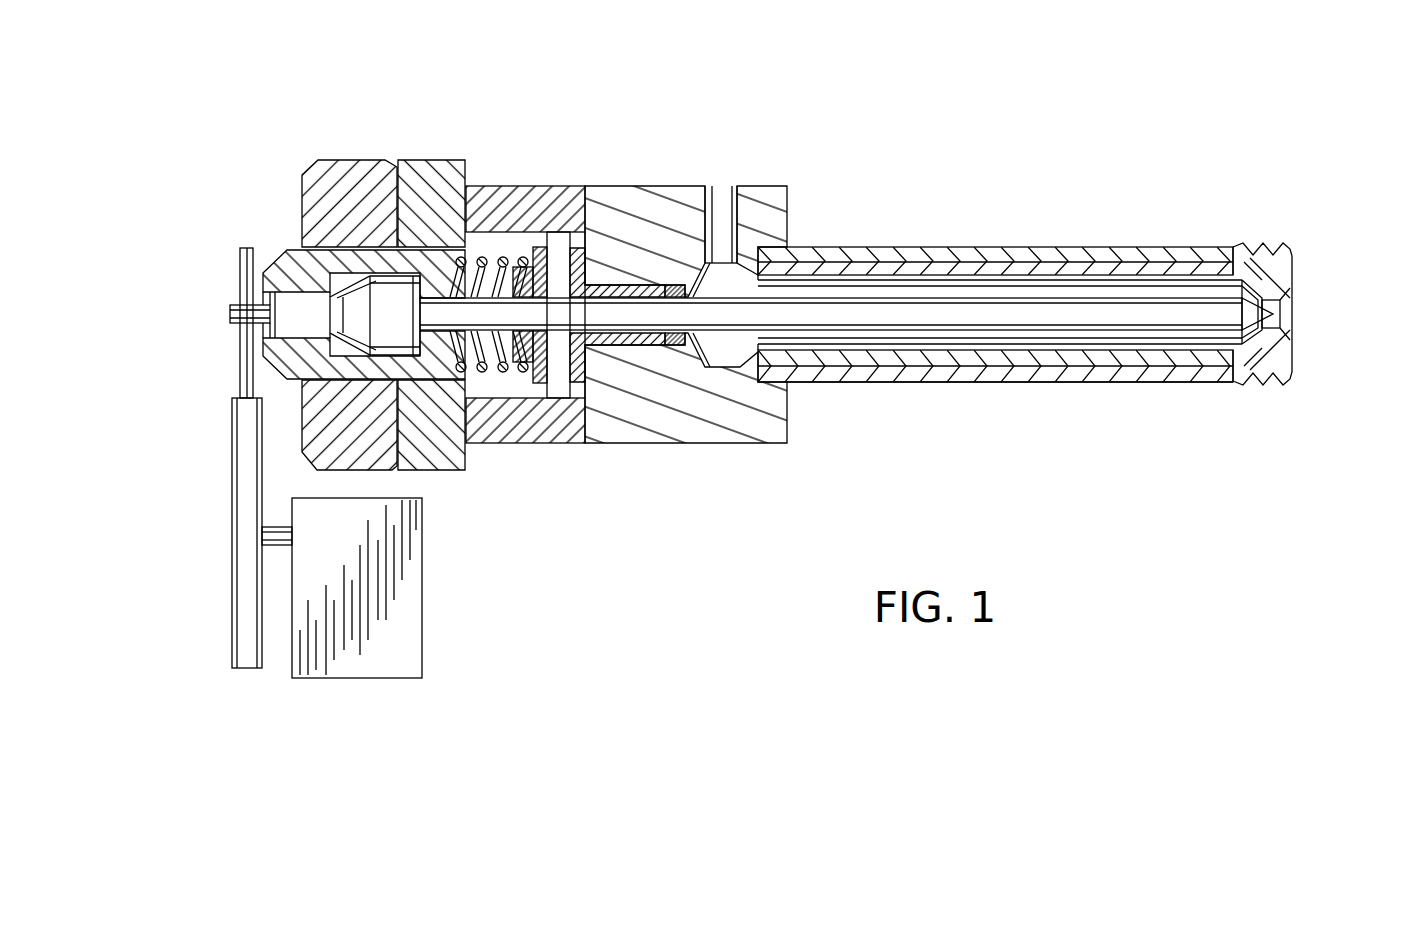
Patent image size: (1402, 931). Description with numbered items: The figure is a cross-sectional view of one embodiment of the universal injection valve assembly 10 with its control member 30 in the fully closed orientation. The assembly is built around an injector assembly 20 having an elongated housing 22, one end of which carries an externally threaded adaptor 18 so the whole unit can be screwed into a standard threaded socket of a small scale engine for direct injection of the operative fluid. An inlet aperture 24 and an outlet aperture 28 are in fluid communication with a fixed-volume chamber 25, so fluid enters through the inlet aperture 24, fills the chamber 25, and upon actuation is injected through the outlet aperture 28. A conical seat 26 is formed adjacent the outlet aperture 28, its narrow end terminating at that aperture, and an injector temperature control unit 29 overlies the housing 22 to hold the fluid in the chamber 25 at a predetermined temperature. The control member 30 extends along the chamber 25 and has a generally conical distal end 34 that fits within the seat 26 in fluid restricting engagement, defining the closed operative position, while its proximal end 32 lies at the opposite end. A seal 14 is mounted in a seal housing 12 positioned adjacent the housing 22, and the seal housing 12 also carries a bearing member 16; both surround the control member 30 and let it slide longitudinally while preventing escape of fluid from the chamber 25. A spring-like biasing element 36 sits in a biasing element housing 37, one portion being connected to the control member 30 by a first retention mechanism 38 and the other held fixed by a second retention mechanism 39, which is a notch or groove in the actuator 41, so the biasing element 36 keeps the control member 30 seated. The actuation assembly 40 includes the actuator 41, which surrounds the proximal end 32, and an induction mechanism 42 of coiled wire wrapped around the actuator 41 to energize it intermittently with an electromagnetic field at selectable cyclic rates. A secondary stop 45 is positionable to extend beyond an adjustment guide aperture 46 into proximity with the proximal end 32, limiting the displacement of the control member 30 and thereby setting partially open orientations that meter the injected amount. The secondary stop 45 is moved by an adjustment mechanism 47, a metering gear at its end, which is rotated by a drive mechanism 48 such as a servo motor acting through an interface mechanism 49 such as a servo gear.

The universal injection valve assembly 10 is at (950, 110).
The seal housing 12 is at (598, 186).
The seal 14 is at (687, 284).
The bearing member 16 is at (583, 233).
The adaptor 18 is at (1258, 372).
The injector assembly 20 is at (1052, 228).
The housing 22 is at (985, 383).
The inlet aperture 24 is at (722, 186).
The chamber 25 is at (905, 355).
The seat 26 is at (1262, 280).
The outlet aperture 28 is at (1290, 313).
The injector temperature control unit 29 is at (1074, 385).
The control member 30 is at (855, 288).
The proximal end 32 is at (363, 328).
The distal end 34 is at (1278, 322).
The biasing element 36 is at (502, 372).
The biasing element housing 37 is at (500, 186).
The first retention mechanism 38 is at (540, 385).
The second retention mechanism 39 is at (463, 373).
The actuation assembly 40 is at (358, 698).
The actuator 41 is at (425, 160).
The induction mechanism 42 is at (360, 160).
The secondary stop 45 is at (287, 287).
The adjustment guide aperture 46 is at (340, 298).
The adjustment mechanism 47 is at (243, 263).
The drive mechanism 48 is at (422, 612).
The interface mechanism 49 is at (240, 637).